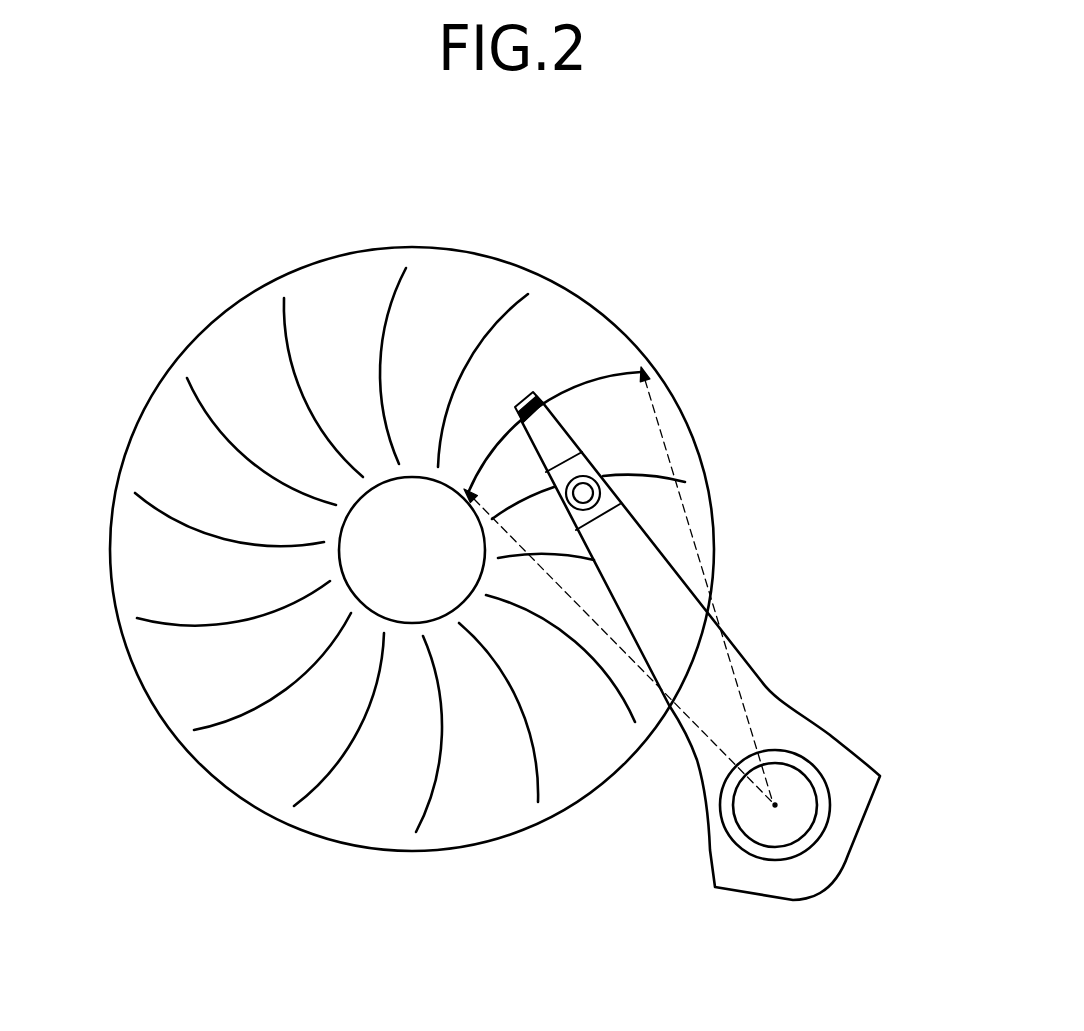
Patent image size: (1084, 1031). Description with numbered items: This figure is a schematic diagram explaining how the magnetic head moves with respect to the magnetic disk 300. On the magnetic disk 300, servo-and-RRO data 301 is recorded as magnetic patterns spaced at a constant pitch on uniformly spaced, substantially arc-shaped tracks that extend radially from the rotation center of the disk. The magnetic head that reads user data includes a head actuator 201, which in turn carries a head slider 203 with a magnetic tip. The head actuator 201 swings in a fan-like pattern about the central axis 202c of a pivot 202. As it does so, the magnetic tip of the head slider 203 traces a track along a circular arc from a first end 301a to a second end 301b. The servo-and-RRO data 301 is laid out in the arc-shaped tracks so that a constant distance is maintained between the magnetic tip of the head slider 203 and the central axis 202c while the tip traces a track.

The magnetic disk 300 is at (136, 432).
The servo-and-RRO data 301 is at (398, 287).
The first end 301a is at (466, 495).
The second end 301b is at (646, 371).
The head actuator 201 is at (747, 659).
The head slider 203 is at (523, 393).
The pivot 202 is at (785, 833).
The central axis 202c is at (777, 806).